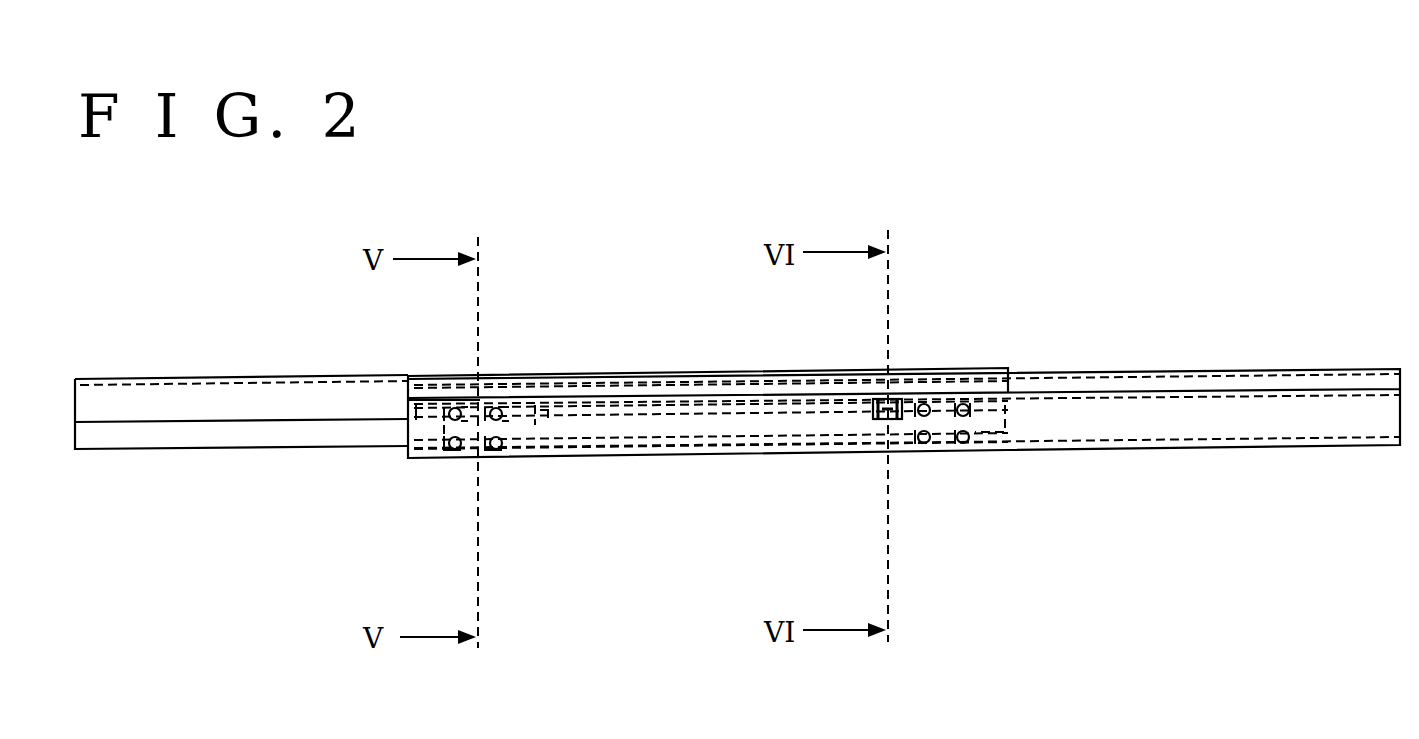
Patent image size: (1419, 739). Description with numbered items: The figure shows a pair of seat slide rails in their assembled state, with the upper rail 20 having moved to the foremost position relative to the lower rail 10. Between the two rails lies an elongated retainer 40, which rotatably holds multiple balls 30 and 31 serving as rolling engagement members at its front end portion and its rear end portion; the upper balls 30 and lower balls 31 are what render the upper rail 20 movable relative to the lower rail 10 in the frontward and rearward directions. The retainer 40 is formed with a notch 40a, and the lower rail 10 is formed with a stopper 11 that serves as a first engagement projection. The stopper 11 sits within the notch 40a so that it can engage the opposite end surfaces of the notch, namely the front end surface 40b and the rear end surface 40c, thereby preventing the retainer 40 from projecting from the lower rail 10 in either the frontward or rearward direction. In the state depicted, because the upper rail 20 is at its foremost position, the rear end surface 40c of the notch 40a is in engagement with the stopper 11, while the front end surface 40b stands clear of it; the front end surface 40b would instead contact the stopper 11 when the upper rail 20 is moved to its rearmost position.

The lower rail 10 is at (1274, 398).
The stopper 11 is at (873, 400).
The upper rail 20 is at (328, 396).
The ball 30 is at (453, 408).
The ball 31 is at (457, 462).
The retainer 40 is at (722, 455).
The notch 40a is at (800, 412).
The front end surface 40b is at (568, 395).
The rear end surface 40c is at (918, 372).